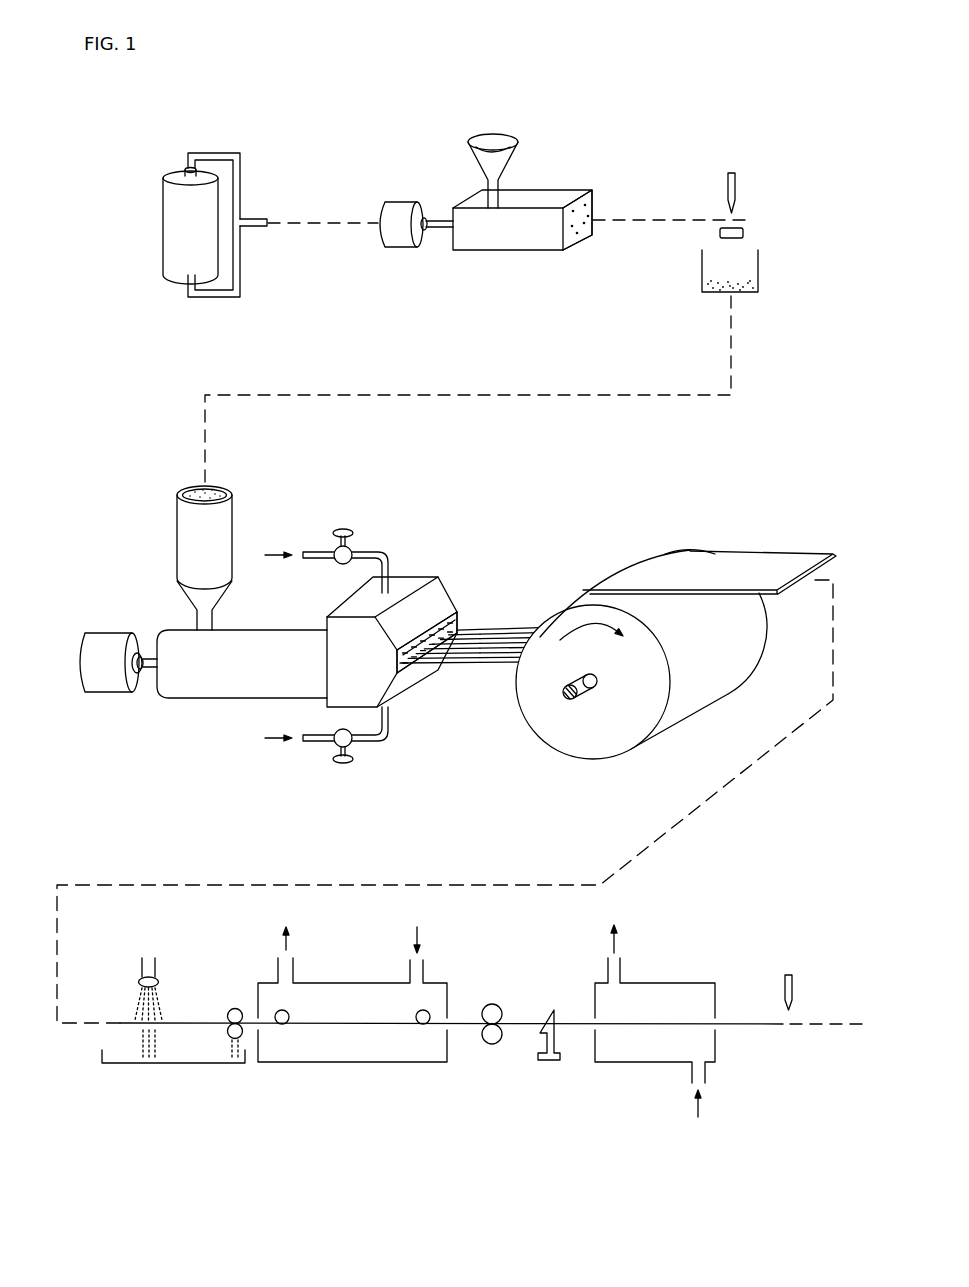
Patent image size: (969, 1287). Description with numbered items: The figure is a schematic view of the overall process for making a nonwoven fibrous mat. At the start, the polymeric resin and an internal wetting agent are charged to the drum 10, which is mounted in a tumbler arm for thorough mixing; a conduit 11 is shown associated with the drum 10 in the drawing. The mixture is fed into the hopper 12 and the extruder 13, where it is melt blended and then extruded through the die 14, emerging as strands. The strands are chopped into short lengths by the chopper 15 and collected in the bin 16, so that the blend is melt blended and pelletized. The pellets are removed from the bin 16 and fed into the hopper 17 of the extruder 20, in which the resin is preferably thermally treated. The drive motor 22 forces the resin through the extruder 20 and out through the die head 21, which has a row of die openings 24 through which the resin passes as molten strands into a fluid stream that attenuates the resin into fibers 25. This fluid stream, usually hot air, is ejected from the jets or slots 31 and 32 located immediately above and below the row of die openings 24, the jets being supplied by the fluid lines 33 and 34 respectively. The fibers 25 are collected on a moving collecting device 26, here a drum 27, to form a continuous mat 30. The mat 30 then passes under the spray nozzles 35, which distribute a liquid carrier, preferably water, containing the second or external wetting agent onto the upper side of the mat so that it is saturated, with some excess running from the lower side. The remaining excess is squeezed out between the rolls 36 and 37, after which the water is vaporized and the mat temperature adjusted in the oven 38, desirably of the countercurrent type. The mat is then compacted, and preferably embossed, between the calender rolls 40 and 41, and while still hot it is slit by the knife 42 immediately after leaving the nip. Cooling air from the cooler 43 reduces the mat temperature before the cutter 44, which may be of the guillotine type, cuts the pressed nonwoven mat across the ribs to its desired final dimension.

The drum 10 is at (173, 231).
The conduit 11 is at (241, 176).
The hopper 12 is at (495, 142).
The extruder 13 is at (535, 193).
The die 14 is at (581, 207).
The chopper 15 is at (736, 190).
The bin 16 is at (759, 268).
The hopper 17 is at (187, 556).
The extruder 20 is at (245, 638).
The die head 21 is at (439, 557).
The drive motor 22 is at (108, 642).
The die openings 24 is at (448, 630).
The fibers 25 is at (519, 615).
The moving collecting device 26 is at (606, 567).
The drum 27 is at (573, 741).
The mat 30 is at (753, 563).
The jet or slot 31 is at (405, 663).
The jet or slot 32 is at (405, 666).
The fluid line 33 is at (370, 550).
The fluid line 34 is at (382, 741).
The spray nozzles 35 is at (156, 970).
The roll 36 is at (228, 1013).
The roll 37 is at (228, 1034).
The oven 38 is at (318, 983).
The calender roll 40 is at (487, 1005).
The calender roll 41 is at (487, 1044).
The knife 42 is at (545, 1020).
The cooler 43 is at (652, 983).
The cutter 44 is at (793, 990).